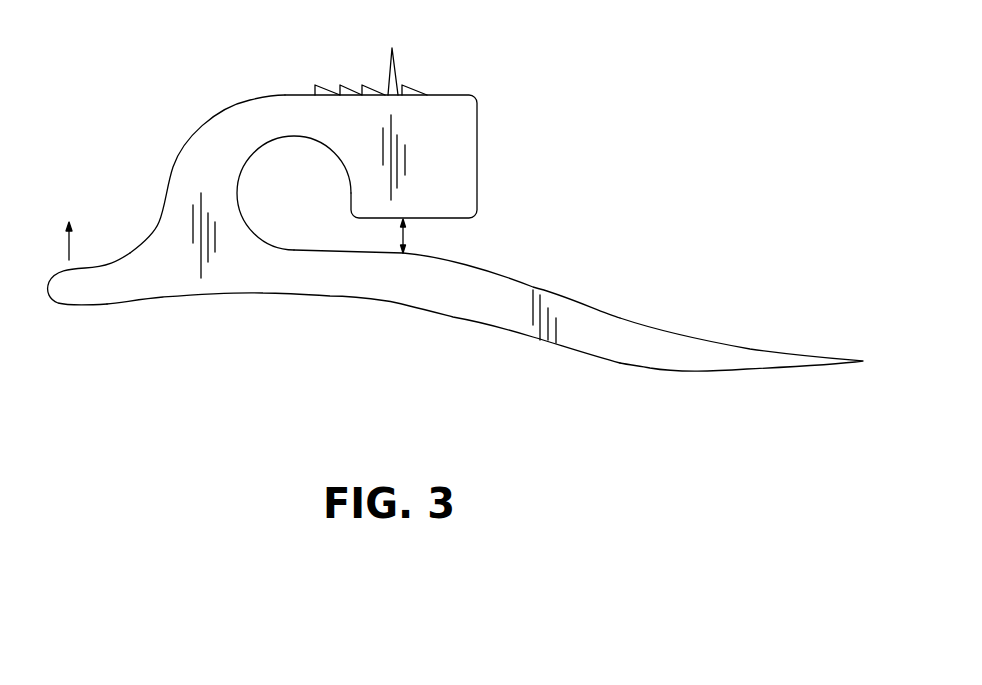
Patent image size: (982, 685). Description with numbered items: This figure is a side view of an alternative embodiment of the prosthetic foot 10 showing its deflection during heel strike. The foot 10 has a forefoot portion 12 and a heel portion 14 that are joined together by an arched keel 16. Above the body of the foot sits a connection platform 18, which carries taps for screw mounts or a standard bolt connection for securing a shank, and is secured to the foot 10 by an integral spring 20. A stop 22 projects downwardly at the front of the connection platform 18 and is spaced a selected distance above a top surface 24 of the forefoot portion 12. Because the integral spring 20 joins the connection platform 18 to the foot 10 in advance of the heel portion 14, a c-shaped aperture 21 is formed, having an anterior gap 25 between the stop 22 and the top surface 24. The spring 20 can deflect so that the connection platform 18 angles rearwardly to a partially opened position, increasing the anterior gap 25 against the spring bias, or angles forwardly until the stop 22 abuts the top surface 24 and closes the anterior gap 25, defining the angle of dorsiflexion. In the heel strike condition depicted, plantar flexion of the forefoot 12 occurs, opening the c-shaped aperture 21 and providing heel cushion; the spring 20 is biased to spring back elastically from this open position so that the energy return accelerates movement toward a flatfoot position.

The prosthetic foot 10 is at (624, 386).
The forefoot portion 12 is at (647, 327).
The heel portion 14 is at (107, 297).
The arched keel 16 is at (487, 327).
The connection platform 18 is at (448, 95).
The integral spring 20 is at (218, 123).
The c-shaped aperture 21 is at (297, 205).
The stop 22 is at (455, 145).
The top surface 24 is at (528, 283).
The anterior gap 25 is at (408, 242).